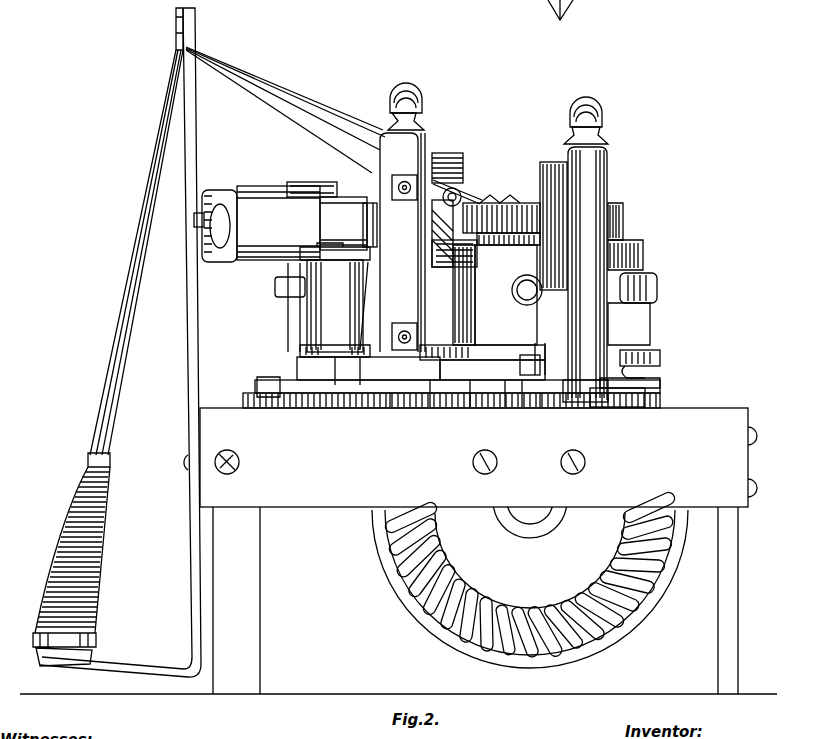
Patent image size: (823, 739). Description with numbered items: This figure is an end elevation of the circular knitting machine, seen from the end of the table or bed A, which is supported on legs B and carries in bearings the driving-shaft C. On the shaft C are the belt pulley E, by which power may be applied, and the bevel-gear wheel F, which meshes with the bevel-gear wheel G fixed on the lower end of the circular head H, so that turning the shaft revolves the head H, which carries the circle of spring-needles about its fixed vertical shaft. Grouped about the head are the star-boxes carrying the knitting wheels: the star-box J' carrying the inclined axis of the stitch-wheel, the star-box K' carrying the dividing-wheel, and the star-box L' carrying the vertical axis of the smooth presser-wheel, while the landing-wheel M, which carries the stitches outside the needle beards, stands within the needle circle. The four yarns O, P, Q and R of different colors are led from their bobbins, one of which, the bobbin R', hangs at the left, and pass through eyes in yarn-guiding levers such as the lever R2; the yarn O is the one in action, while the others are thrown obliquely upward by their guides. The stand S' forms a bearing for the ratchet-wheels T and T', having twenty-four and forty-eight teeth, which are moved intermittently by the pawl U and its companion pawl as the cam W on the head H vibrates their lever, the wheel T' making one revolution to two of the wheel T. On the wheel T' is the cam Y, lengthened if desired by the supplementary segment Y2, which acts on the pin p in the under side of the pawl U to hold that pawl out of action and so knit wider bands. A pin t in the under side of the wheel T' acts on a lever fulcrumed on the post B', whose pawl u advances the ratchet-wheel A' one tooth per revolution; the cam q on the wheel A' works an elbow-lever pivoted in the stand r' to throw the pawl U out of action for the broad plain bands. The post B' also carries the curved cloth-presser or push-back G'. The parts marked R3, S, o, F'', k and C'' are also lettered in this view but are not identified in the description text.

The cord tube R3 is at (176, 23).
The bobbin R' is at (108, 358).
The table or bed A is at (470, 457).
The legs B is at (475, 600).
The pulley E is at (528, 589).
The bevel-gear wheel F is at (529, 574).
The driving-shaft C is at (530, 522).
The star-box L' is at (230, 233).
The star-box J' is at (307, 223).
The star-box K' is at (299, 182).
The supplementary segment Y2 is at (293, 384).
The cam Y is at (368, 386).
The ratchet-wheel T is at (368, 369).
The ratchet-wheel bearing stand S' is at (402, 217).
The yarn Q is at (349, 115).
The yarn R is at (285, 199).
The yarn P is at (350, 128).
The yarn O is at (338, 147).
The pulley S is at (447, 158).
The yarn-guiding lever R2 is at (470, 192).
The landing-wheel M is at (492, 200).
The bar o is at (448, 263).
The circular stock or head H is at (508, 295).
The cloth-presser or push-back G' is at (553, 217).
The post B' is at (594, 248).
The cam W is at (650, 360).
The bevel-gear wheel G is at (640, 376).
The cam q is at (650, 392).
The ratchet-wheel A' is at (627, 398).
The foot F'' is at (589, 403).
The pin k is at (538, 350).
The pawl U is at (528, 357).
The pawl u is at (545, 400).
The pin p is at (522, 402).
The stand r' is at (501, 403).
The plate C'' is at (467, 407).
The ratchet-wheel T' is at (420, 407).
The pin t is at (390, 408).